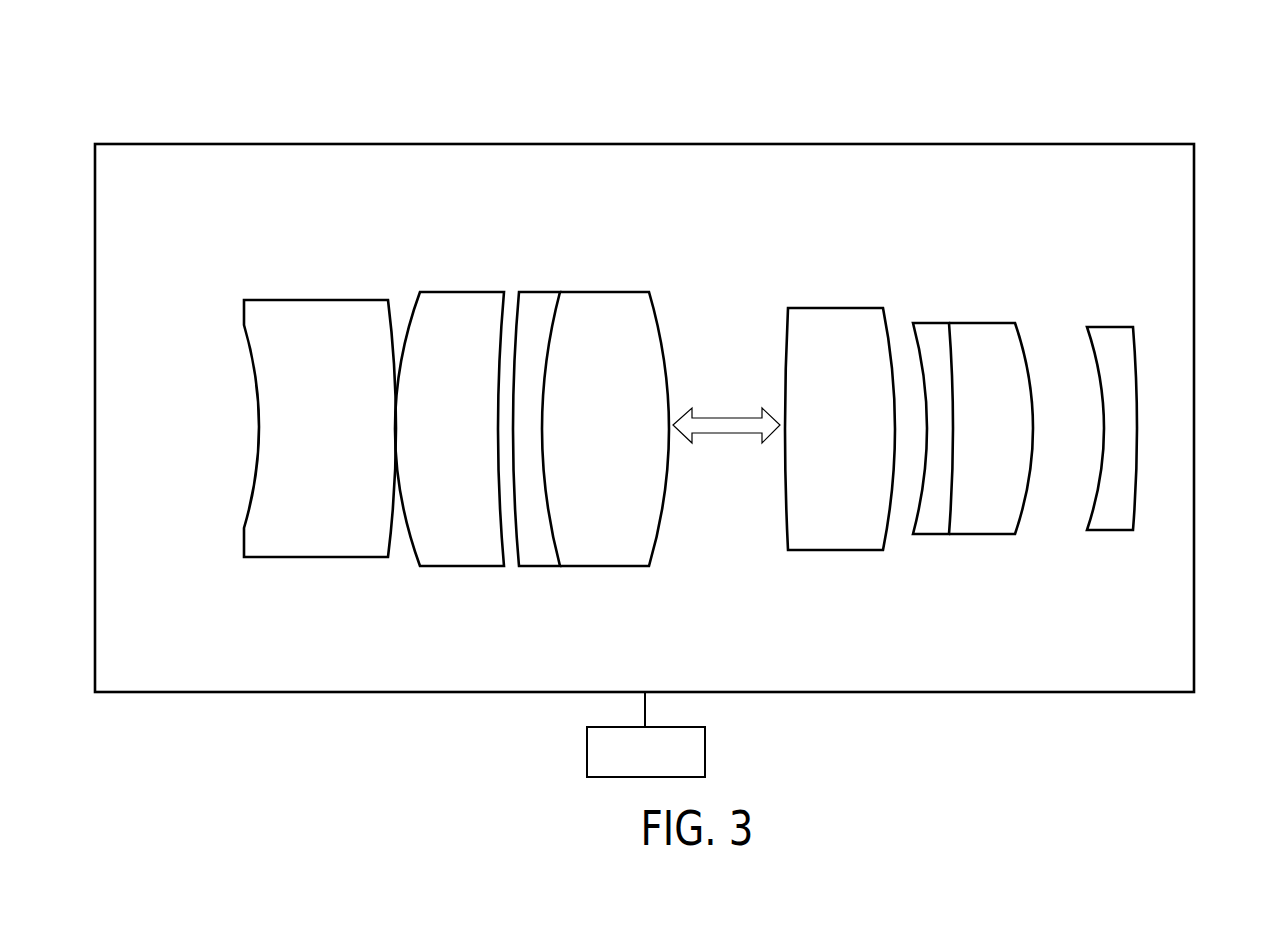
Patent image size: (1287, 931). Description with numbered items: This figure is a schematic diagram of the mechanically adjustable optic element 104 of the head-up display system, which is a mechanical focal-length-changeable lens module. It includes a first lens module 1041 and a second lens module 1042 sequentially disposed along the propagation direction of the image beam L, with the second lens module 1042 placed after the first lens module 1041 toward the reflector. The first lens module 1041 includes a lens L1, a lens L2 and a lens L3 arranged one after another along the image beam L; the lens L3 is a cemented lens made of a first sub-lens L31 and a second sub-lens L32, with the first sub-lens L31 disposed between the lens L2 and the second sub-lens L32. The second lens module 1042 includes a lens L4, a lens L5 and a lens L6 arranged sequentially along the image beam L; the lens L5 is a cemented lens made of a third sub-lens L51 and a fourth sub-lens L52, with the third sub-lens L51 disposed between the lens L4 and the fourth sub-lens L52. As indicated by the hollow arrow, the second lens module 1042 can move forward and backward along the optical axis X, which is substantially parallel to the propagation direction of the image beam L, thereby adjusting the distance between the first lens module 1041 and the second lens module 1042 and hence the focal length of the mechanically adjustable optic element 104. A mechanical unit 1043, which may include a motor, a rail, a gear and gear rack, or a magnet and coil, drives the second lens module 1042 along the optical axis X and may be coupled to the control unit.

The mechanically adjustable optic element 104 is at (1157, 108).
The first lens module 1041 is at (662, 215).
The second lens module 1042 is at (1175, 215).
The mechanical unit 1043 is at (618, 764).
The lens L1 is at (320, 538).
The lens L2 is at (458, 538).
The lens L3 is at (591, 482).
The first sub-lens L31 is at (537, 538).
The second sub-lens L32 is at (614, 458).
The lens L4 is at (843, 538).
The lens L5 is at (965, 498).
The third sub-lens L51 is at (932, 524).
The fourth sub-lens L52 is at (987, 524).
The lens L6 is at (1110, 523).
The optical axis X is at (257, 428).
The image beam L is at (263, 657).